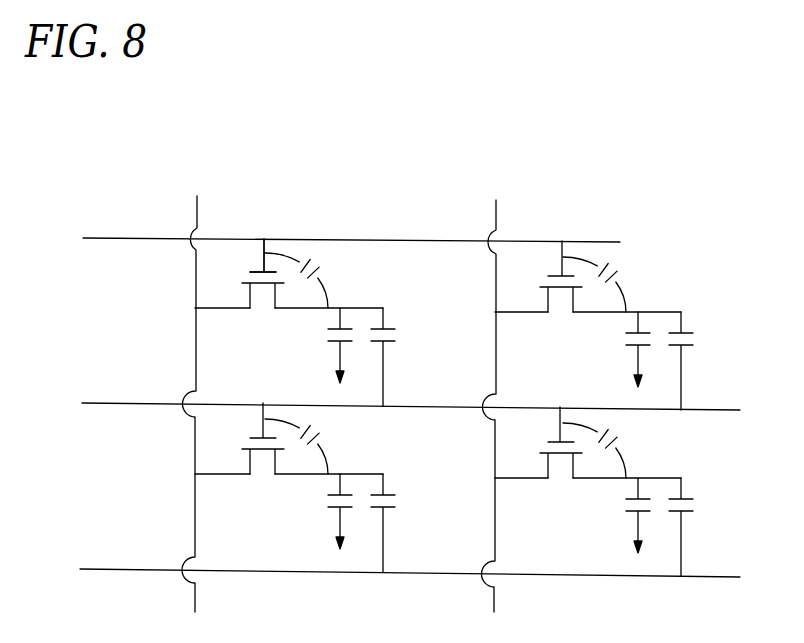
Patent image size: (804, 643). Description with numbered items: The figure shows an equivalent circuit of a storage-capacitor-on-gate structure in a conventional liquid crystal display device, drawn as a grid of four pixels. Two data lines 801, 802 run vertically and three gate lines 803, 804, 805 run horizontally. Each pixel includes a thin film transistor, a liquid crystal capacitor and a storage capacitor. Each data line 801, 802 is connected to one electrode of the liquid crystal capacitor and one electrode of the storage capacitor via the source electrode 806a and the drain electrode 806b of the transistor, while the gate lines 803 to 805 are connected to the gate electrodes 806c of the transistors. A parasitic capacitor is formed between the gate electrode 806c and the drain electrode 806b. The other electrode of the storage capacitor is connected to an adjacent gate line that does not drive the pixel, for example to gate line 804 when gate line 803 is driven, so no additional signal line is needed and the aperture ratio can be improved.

The data line 801 is at (198, 209).
The data line 802 is at (497, 211).
The gate line 803 is at (120, 237).
The gate line 804 is at (114, 403).
The gate line 805 is at (113, 568).
The source electrode 806a is at (216, 311).
The drain electrode 806b is at (303, 310).
The gate electrode 806c is at (267, 241).